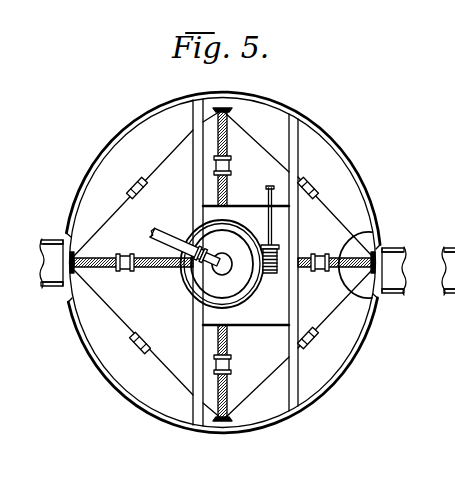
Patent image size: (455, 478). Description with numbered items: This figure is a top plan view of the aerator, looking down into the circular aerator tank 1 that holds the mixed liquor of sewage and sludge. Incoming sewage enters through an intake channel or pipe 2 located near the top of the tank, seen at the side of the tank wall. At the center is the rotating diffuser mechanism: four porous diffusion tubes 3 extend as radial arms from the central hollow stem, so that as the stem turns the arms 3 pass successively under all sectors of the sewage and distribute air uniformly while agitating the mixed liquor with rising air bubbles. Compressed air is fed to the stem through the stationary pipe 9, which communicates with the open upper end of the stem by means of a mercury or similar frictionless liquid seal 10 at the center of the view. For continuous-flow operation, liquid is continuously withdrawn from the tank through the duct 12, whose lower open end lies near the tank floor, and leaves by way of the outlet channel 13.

The aerator tank 1 is at (323, 394).
The intake channel or pipe 2 is at (45, 290).
The porous diffusion tubes 3 is at (230, 155).
The stationary pipe 9 is at (176, 235).
The liquid seal 10 is at (237, 284).
The duct 12 is at (367, 243).
The channel 13 is at (393, 297).